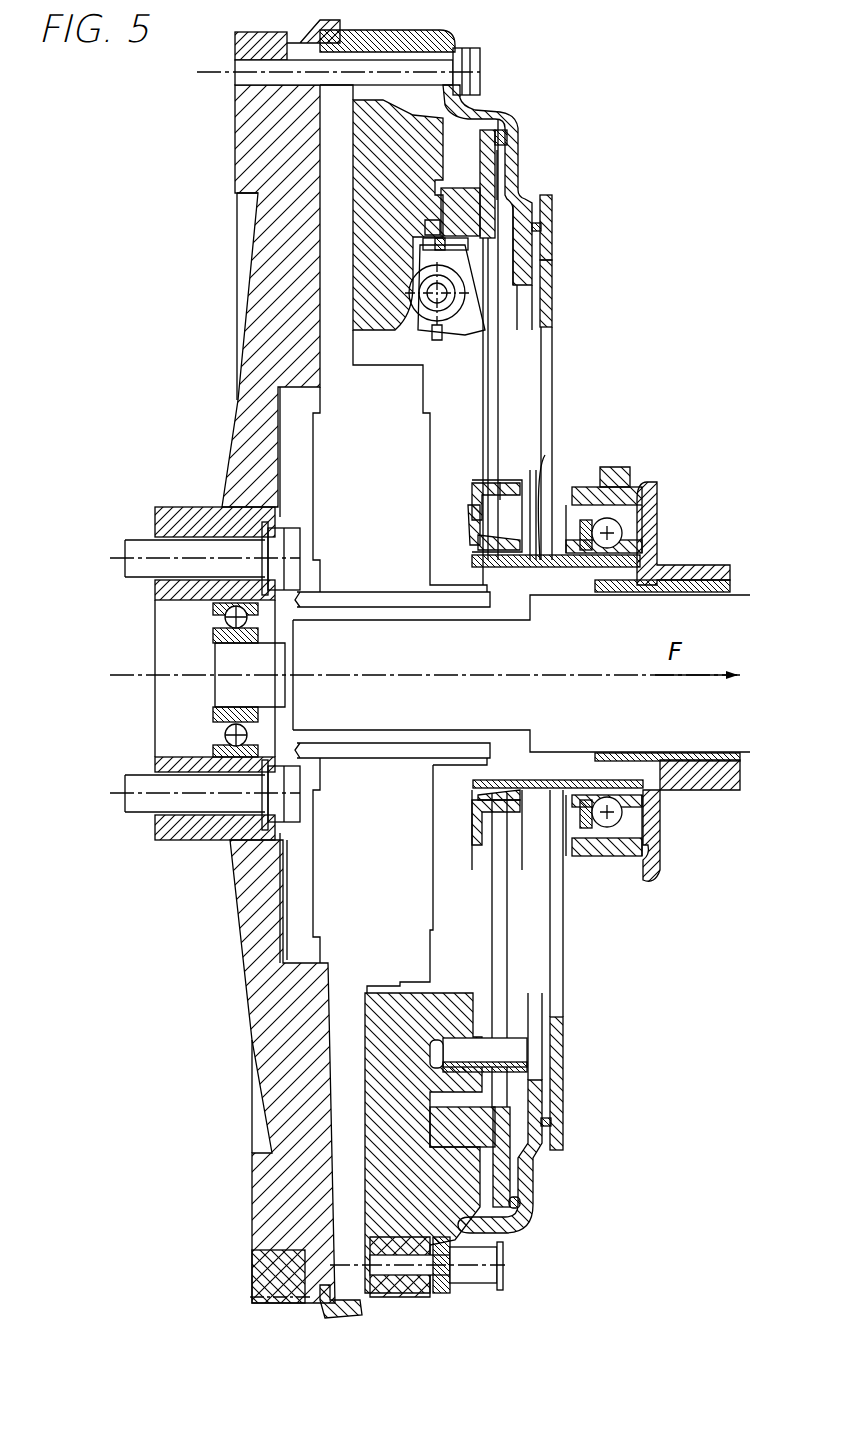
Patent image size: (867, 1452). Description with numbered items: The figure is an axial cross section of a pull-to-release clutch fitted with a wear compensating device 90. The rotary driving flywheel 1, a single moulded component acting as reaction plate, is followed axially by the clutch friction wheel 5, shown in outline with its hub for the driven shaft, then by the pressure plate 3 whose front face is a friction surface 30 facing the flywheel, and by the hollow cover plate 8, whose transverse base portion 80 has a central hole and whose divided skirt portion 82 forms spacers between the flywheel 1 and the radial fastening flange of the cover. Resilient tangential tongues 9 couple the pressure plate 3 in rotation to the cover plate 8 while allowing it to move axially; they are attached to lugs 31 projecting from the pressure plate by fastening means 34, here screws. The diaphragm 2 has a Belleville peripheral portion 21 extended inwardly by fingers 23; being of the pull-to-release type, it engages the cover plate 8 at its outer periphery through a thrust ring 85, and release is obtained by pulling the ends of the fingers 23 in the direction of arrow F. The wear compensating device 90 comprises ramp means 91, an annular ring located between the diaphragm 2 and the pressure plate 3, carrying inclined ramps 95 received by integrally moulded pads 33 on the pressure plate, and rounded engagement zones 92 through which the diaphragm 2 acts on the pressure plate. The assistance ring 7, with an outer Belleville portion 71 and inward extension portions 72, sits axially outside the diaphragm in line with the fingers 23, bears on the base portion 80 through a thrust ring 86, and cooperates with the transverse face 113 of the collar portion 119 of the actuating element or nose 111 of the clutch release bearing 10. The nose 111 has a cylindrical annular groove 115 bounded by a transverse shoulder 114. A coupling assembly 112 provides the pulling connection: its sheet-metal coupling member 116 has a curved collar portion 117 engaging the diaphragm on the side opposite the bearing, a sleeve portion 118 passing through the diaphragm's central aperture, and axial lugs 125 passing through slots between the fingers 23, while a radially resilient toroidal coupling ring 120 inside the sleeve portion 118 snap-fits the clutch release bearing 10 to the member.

The rotary driving flywheel 1 is at (235, 152).
The diaphragm 2 is at (484, 390).
The pressure plate 3 is at (397, 112).
The clutch friction wheel 5 is at (318, 447).
The assistance ring 7 is at (556, 406).
The cover plate 8 is at (521, 112).
The resilient tongues 9 is at (445, 1297).
The clutch release bearing 10 is at (673, 492).
The peripheral portion of the diaphragm 21 is at (497, 165).
The fingers of the diaphragm 23 is at (486, 375).
The friction surface 30 is at (355, 213).
The lugs 31 is at (435, 1292).
The pads 33 is at (427, 228).
The fastening means 34 is at (504, 1266).
The Belleville ring portion of the assistance ring 71 is at (553, 296).
The extension portions 72 is at (556, 458).
The base portion of the cover plate 80 is at (550, 257).
The skirt portion of the cover plate 82 is at (430, 38).
The thrust ring 85 is at (494, 120).
The thrust ring 86 is at (546, 232).
The wear compensating device 90 is at (420, 333).
The ramp means 91 is at (470, 197).
The engagement zones 92 is at (506, 222).
The inclined ramps 95 is at (426, 244).
The actuating element or nose 111 is at (517, 579).
The coupling assembly 112 is at (468, 841).
The transverse face 113 is at (601, 470).
The transverse shoulder 114 is at (504, 800).
The cylindrical annular groove 115 is at (531, 482).
The coupling member 116 is at (466, 497).
The collar portion 117 is at (468, 514).
The sleeve portion 118 is at (500, 484).
The collar portion of the actuating element 119 is at (545, 792).
The coupling ring 120 is at (478, 551).
The lugs 125 is at (470, 486).